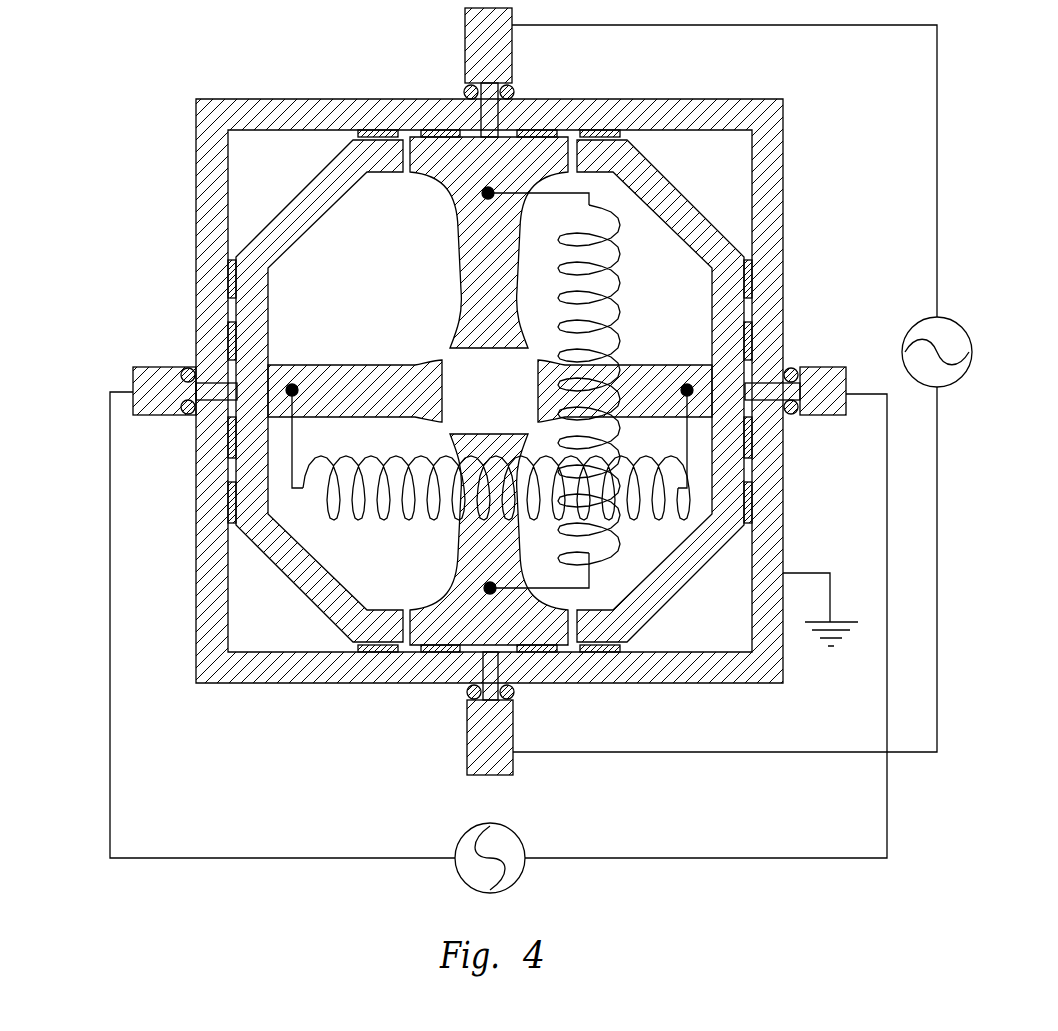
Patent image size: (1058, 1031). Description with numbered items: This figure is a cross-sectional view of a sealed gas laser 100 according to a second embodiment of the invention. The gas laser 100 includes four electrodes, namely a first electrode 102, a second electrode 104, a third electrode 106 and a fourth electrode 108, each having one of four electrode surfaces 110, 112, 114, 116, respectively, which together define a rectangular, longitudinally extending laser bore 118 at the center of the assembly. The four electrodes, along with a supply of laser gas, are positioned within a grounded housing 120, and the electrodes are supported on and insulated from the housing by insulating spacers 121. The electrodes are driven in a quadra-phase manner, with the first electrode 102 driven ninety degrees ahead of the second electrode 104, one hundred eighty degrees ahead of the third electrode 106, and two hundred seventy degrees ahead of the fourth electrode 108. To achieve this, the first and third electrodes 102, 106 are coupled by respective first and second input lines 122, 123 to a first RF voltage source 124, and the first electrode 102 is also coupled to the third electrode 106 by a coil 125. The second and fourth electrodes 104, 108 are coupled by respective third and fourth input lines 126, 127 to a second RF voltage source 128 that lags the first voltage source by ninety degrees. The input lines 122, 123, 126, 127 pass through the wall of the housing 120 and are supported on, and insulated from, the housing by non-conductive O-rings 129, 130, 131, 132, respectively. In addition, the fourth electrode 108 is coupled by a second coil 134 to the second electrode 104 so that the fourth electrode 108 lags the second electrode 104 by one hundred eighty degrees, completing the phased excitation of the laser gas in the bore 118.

The gas laser 100 is at (824, 98).
The first electrode 102 is at (466, 240).
The second electrode 104 is at (348, 366).
The third electrode 106 is at (441, 605).
The fourth electrode 108 is at (657, 385).
The electrode surface 110 is at (448, 350).
The electrode surface 112 is at (452, 427).
The electrode surface 114 is at (480, 436).
The electrode surface 116 is at (534, 368).
The laser bore 118 is at (505, 393).
The housing 120 is at (773, 545).
The insulating spacers 121 is at (446, 132).
The first input line 122 is at (467, 48).
The second input line 123 is at (512, 726).
The first RF voltage source 124 is at (905, 338).
The coil 125 is at (622, 272).
The third input line 126 is at (150, 368).
The fourth input line 127 is at (828, 418).
The second RF voltage source 128 is at (528, 835).
The non-conductive O-ring 129 is at (512, 92).
The non-conductive O-ring 130 is at (470, 696).
The non-conductive O-ring 131 is at (186, 412).
The non-conductive O-ring 132 is at (795, 413).
The second coil 134 is at (668, 505).